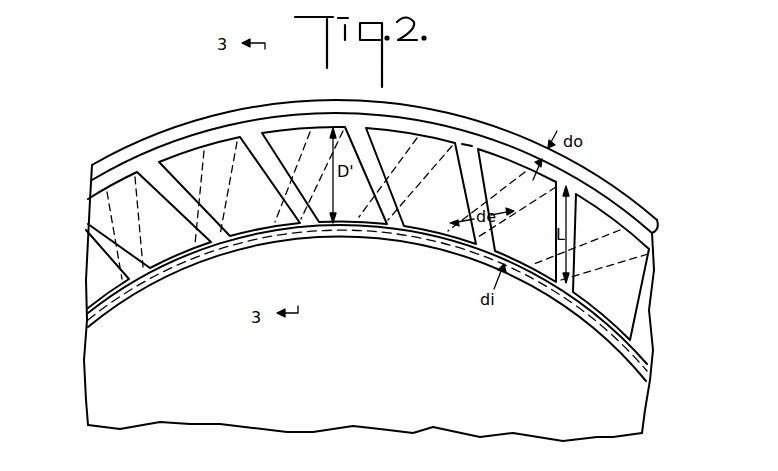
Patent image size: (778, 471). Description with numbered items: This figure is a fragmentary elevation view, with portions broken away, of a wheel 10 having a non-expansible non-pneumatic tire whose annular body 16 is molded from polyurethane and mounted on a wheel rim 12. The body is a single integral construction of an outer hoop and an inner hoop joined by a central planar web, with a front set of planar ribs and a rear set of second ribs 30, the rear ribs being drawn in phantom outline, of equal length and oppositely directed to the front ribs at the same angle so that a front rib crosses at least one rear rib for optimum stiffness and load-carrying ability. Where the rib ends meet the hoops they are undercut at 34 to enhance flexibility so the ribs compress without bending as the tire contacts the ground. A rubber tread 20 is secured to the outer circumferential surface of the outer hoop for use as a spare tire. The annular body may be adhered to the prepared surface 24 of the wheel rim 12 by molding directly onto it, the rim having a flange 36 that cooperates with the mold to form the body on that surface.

The wheel 10 is at (614, 171).
The wheel rim 12 is at (545, 390).
The non-pneumatic tire (NPT) annular body 16 is at (318, 112).
The rubber tread 20 is at (384, 103).
The surface of wheel rim 24 is at (405, 243).
The second ribs (rear set) 30 is at (273, 175).
The undercut 34 is at (93, 200).
The flange 36 is at (127, 297).